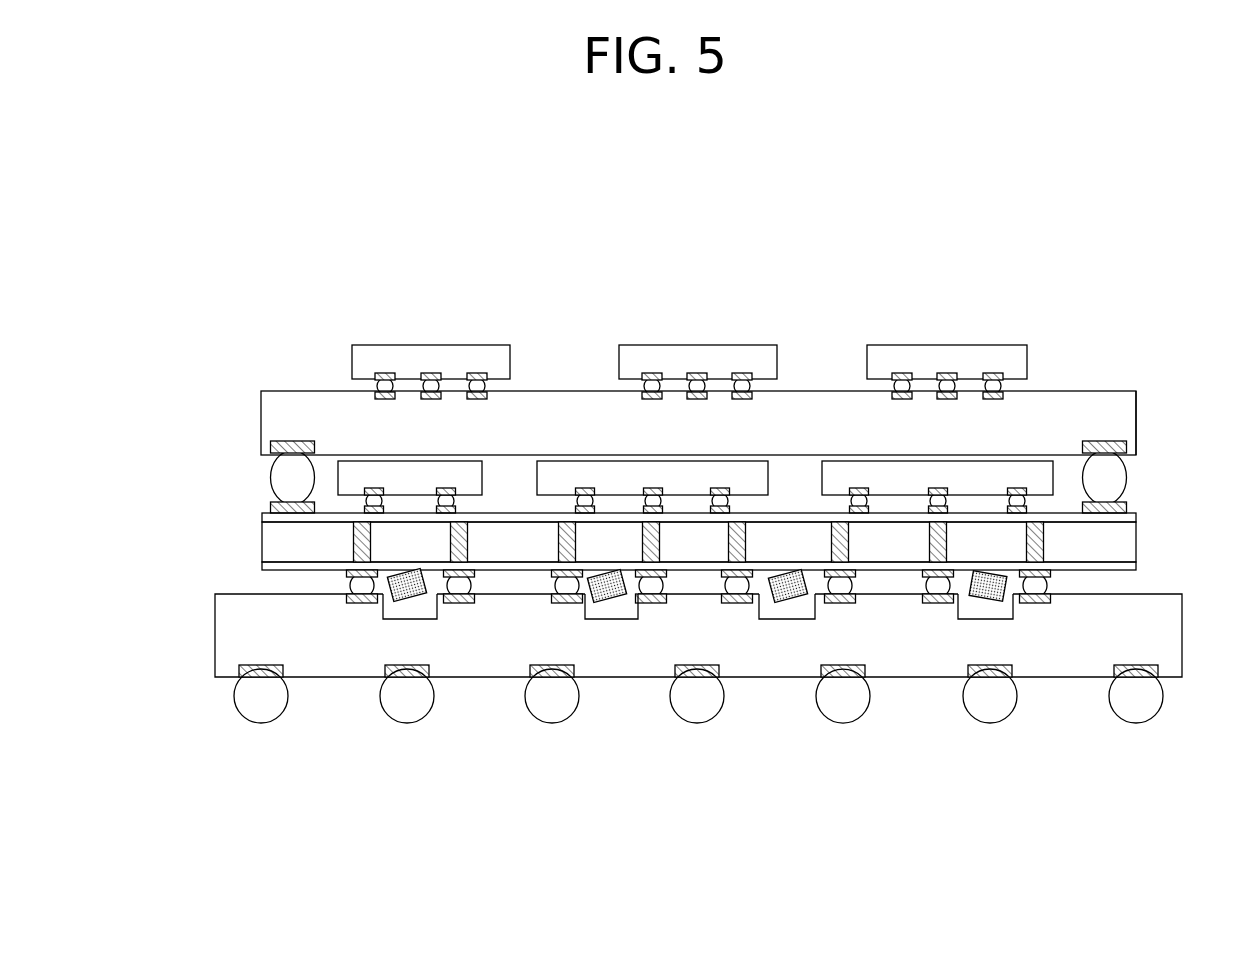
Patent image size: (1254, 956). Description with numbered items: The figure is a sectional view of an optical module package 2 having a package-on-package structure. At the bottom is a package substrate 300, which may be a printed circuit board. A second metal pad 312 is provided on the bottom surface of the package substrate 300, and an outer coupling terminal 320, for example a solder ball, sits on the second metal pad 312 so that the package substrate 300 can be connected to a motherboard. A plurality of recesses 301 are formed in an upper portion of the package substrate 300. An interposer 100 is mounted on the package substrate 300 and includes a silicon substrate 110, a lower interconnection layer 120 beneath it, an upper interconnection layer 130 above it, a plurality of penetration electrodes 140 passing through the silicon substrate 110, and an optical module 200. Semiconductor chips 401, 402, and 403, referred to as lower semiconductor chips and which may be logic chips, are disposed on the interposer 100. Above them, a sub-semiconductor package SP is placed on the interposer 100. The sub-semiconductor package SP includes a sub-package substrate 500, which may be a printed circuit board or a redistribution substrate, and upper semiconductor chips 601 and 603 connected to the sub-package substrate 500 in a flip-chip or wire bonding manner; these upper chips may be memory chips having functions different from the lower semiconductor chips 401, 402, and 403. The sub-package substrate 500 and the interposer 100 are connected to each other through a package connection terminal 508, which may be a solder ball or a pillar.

The optical module package 2 is at (1131, 266).
The sub-semiconductor package SP is at (1143, 421).
The sub-package substrate 500 is at (262, 416).
The package connection terminal 508 is at (283, 478).
The interposer 100 is at (626, 633).
The upper interconnection layer 130 is at (273, 518).
The silicon substrate 110 is at (273, 542).
The lower interconnection layer 120 is at (273, 566).
The penetration electrodes 140 is at (357, 538).
The optical module 200 is at (385, 586).
The package substrate 300 is at (228, 634).
The recesses 301 is at (433, 606).
The second metal pad 312 is at (243, 670).
The outer coupling terminal 320 is at (245, 703).
The semiconductor chip 401 is at (350, 481).
The semiconductor chip 402 is at (568, 478).
The semiconductor chip 403 is at (847, 478).
The upper semiconductor chip 601 is at (428, 355).
The upper semiconductor chip 603 is at (697, 355).